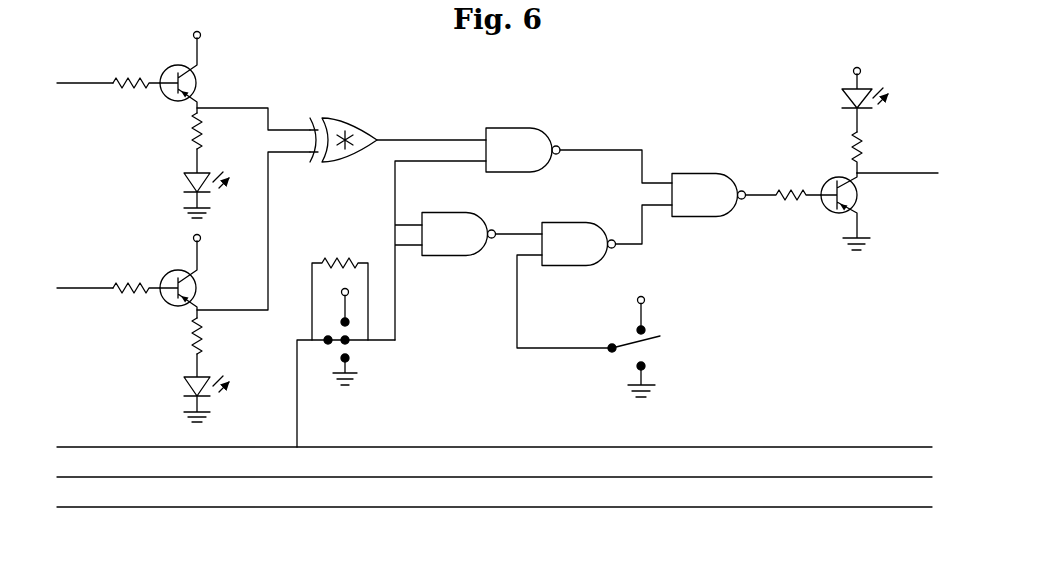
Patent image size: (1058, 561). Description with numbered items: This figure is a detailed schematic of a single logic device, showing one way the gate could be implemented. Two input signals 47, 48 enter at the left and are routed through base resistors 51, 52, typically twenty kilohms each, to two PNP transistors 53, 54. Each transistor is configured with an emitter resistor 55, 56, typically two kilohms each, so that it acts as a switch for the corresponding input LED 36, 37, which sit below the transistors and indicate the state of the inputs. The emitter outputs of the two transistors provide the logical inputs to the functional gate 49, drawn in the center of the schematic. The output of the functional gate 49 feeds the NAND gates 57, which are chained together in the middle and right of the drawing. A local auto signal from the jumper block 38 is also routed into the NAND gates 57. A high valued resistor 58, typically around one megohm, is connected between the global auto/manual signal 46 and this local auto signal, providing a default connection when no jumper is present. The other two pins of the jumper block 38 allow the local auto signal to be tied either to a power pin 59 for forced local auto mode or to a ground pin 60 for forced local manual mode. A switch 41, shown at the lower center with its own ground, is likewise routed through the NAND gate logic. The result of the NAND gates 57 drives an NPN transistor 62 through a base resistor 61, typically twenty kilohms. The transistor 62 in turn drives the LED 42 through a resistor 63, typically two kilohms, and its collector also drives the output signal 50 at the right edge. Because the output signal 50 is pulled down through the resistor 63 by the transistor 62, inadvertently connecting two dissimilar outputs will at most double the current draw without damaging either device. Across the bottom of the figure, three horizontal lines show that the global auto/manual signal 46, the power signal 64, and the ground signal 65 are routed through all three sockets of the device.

The input signal 47 is at (72, 83).
The base resistor 51 is at (132, 75).
The PNP transistor 53 is at (202, 78).
The emitter resistor 55 is at (182, 136).
The input LED 36 is at (175, 190).
The input signal 48 is at (72, 288).
The base resistor 52 is at (132, 280).
The PNP transistor 54 is at (202, 283).
The emitter resistor 56 is at (182, 341).
The input LED 37 is at (173, 405).
The functional gate 49 is at (363, 115).
The NAND gates 57 is at (500, 115).
The high valued resistor 58 is at (340, 253).
The power pin 59 is at (355, 312).
The jumper block 38 is at (369, 359).
The ground pin 60 is at (357, 363).
The switch 41 is at (652, 323).
The base resistor 61 is at (790, 177).
The NPN transistor 62 is at (832, 220).
The resistor 63 is at (842, 147).
The LED 42 is at (832, 89).
The output signal 50 is at (915, 162).
The global auto/manual signal 46 is at (860, 447).
The power signal 64 is at (870, 477).
The ground signal 65 is at (880, 507).